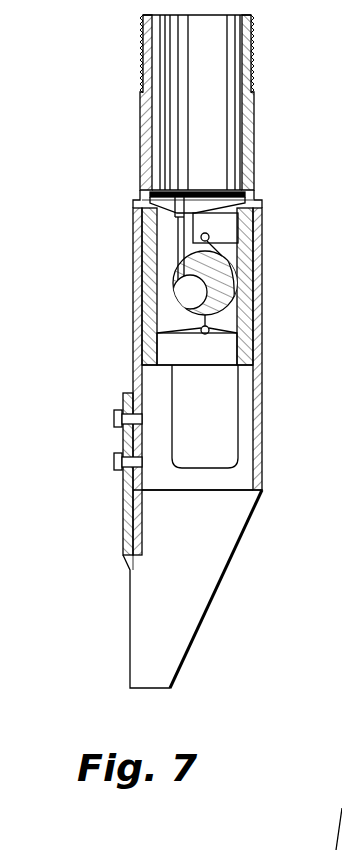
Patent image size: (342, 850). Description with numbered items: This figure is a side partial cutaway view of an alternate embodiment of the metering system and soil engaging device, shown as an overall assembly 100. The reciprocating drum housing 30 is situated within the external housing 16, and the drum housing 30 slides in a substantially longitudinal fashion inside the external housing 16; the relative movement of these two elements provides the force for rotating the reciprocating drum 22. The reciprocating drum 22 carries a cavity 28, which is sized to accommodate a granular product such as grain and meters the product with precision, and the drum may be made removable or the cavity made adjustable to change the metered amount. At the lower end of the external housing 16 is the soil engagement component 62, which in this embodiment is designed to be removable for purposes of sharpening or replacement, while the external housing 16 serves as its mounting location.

The downhole tool assembly 100 is at (120, 181).
The reciprocating drum housing 30 is at (255, 112).
The external housing 16 is at (262, 402).
The cavity 28 is at (232, 272).
The reciprocating drum 22 is at (215, 297).
The soil engagement component 62 is at (185, 617).